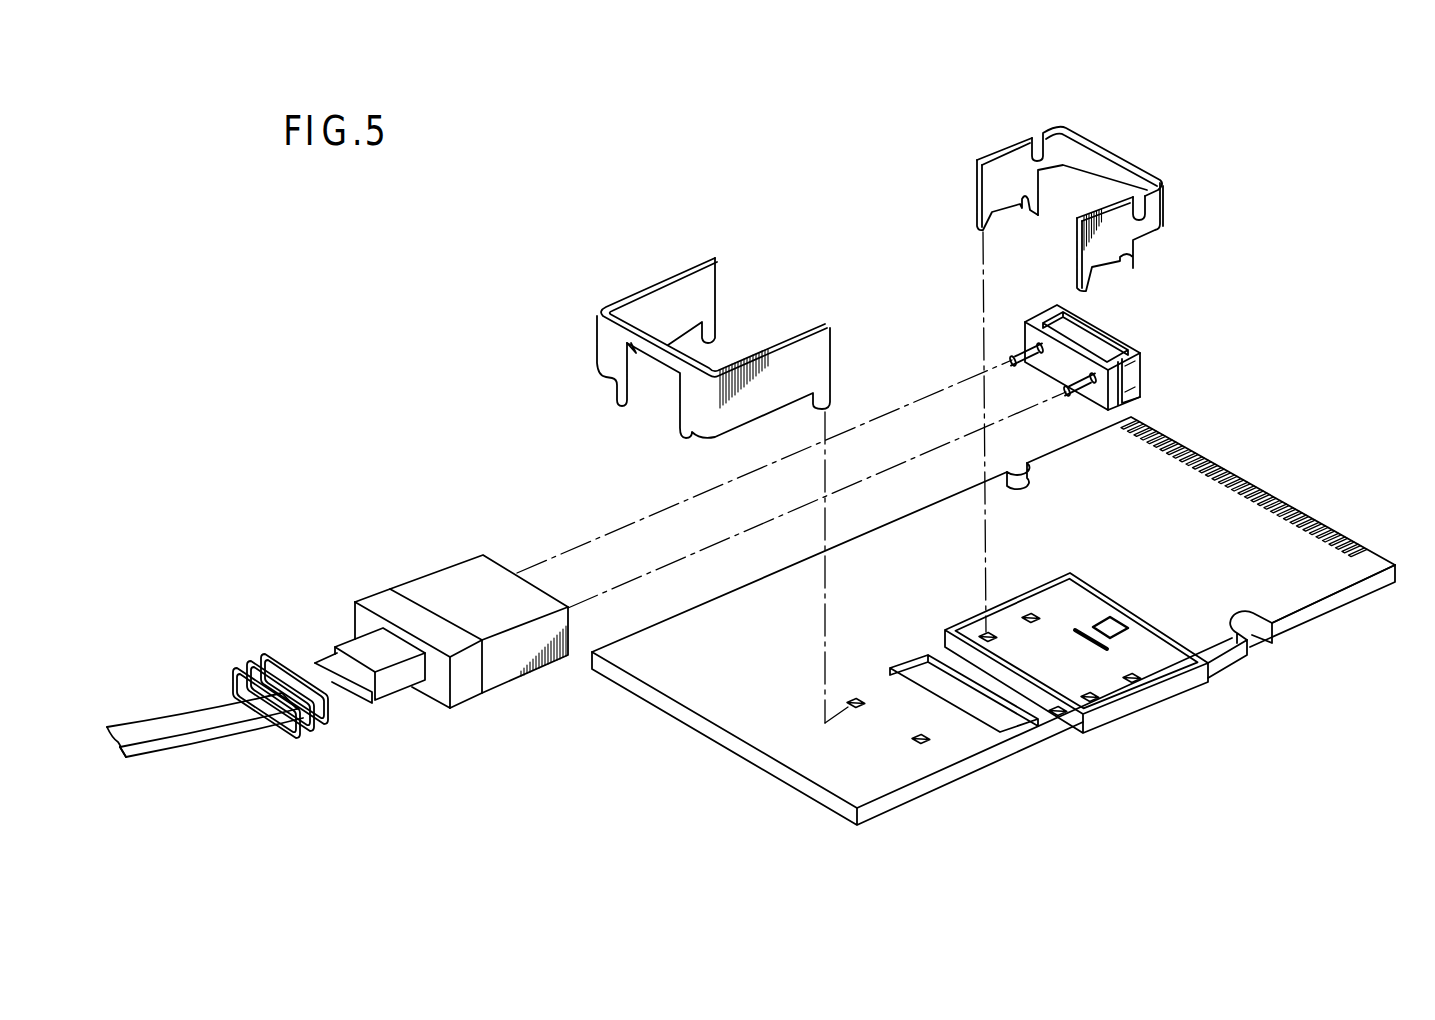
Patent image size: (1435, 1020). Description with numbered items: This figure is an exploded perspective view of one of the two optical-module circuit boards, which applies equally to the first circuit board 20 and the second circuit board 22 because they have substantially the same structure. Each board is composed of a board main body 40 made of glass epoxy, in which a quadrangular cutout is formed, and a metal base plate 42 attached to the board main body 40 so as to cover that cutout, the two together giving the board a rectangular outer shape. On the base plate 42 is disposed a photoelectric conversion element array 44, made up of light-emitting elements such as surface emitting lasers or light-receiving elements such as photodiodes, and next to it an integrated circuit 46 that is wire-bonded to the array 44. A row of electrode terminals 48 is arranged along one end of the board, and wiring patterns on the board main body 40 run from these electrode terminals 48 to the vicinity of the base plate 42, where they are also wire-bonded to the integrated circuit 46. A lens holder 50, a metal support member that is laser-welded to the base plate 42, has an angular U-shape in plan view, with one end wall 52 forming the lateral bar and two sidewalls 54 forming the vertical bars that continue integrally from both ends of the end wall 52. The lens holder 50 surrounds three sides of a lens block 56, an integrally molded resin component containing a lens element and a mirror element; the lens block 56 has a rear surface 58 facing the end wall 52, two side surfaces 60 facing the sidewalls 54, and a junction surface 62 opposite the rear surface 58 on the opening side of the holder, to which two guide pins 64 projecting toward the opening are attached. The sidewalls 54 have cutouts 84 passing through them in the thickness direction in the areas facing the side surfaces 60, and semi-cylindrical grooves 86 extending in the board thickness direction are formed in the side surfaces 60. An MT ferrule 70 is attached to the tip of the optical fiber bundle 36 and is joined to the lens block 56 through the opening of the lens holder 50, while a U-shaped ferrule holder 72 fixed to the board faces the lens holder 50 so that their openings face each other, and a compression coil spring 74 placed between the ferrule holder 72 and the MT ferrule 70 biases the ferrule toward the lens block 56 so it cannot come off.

The first circuit board 20 is at (1316, 520).
The second circuit board 22 is at (1006, 617).
The optical fiber bundle 36 is at (227, 742).
The board main body 40 is at (1297, 600).
The base plate 42 is at (1116, 722).
The photoelectric conversion element array 44 is at (1078, 628).
The integrated circuit 46 is at (1112, 616).
The electrode terminals 48 is at (1222, 460).
The lens holder 50 is at (1097, 139).
The end wall 52 is at (1155, 160).
The sidewalls 54 is at (984, 149).
The lens block 56 is at (1146, 350).
The rear surface 58 is at (1108, 322).
The side surfaces 60 is at (1058, 317).
The junction surface 62 is at (1018, 323).
The guide pins 64 is at (1010, 352).
The MT ferrule 70 is at (500, 683).
The ferrule holder 72 is at (663, 278).
The compression coil spring 74 is at (330, 733).
The cutouts 84 is at (1032, 140).
The grooves 86 is at (1040, 322).